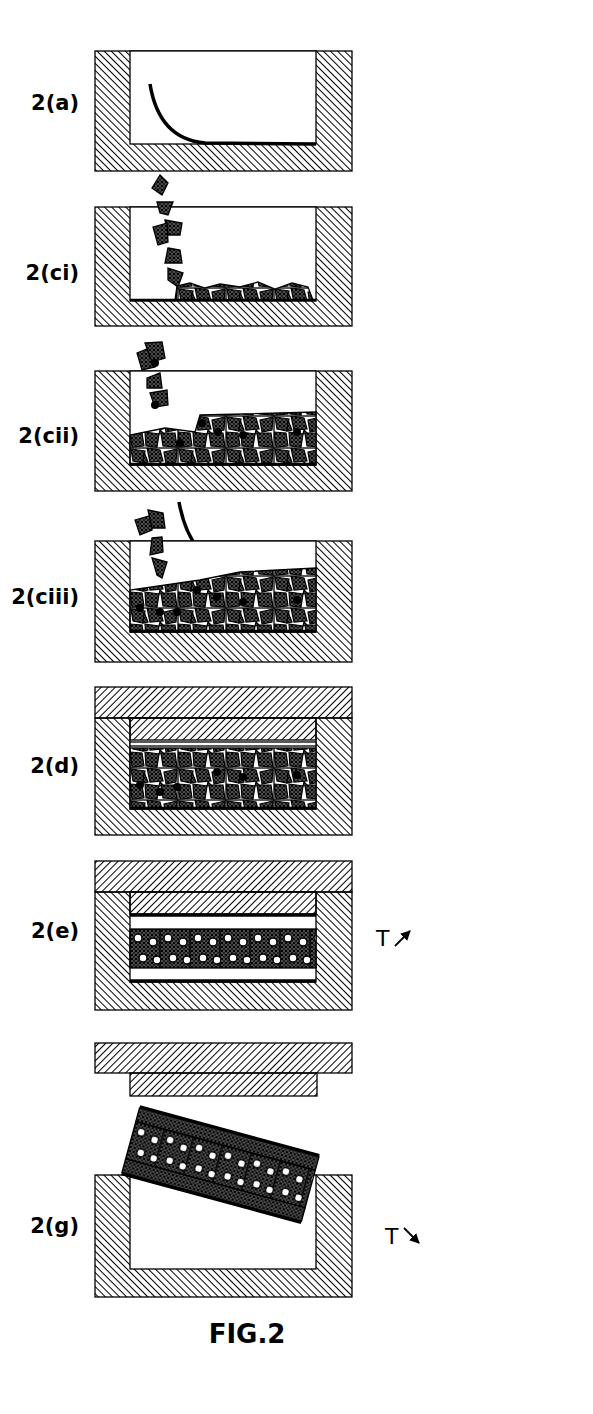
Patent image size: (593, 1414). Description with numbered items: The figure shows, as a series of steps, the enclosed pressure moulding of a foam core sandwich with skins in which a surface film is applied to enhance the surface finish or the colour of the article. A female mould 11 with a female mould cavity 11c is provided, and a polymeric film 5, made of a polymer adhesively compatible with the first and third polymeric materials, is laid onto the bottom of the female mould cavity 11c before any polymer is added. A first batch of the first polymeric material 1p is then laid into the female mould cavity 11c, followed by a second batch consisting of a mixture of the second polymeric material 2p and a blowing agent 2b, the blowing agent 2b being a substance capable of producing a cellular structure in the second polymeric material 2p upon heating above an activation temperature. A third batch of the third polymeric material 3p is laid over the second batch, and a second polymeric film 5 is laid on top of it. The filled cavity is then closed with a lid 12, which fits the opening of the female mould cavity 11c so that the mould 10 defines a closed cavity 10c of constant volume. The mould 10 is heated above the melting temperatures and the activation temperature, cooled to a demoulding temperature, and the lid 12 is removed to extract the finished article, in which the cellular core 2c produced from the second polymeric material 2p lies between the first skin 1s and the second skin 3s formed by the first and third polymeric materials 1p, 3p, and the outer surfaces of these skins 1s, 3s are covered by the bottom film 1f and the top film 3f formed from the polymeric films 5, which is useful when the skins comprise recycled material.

The polymeric film 5 is at (150, 82).
The female mould 11 is at (253, 93).
The female mould cavity 11c is at (240, 82).
The first polymeric material 1p is at (150, 225).
The second polymeric material 2p is at (165, 395).
The blowing agent 2b is at (223, 418).
The third polymeric material 3p is at (148, 548).
The mould 10 is at (272, 753).
The closed cavity 10c is at (317, 744).
The lid 12 is at (318, 1086).
The second skin 3s is at (227, 1139).
The core layer 2c is at (221, 1164).
The first skin 1s is at (213, 1190).
The top film 3f is at (245, 1111).
The bottom film 1f is at (211, 1198).